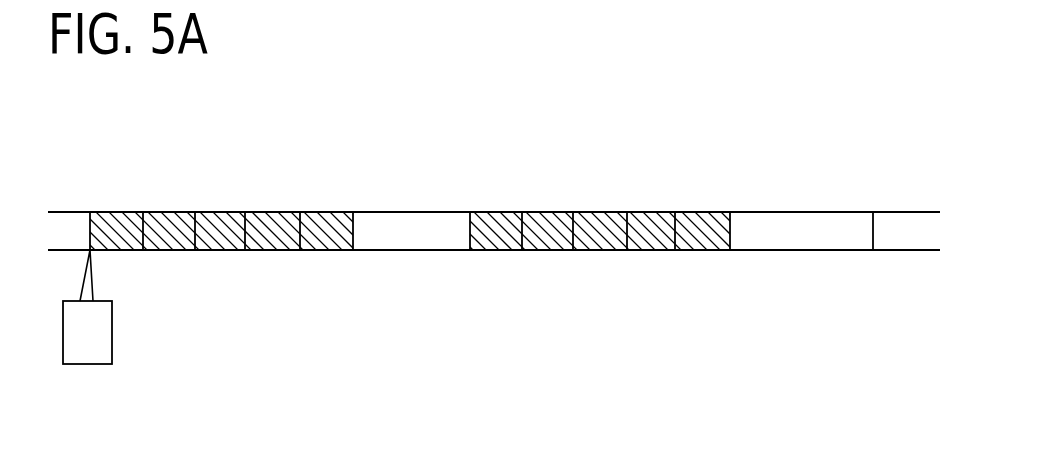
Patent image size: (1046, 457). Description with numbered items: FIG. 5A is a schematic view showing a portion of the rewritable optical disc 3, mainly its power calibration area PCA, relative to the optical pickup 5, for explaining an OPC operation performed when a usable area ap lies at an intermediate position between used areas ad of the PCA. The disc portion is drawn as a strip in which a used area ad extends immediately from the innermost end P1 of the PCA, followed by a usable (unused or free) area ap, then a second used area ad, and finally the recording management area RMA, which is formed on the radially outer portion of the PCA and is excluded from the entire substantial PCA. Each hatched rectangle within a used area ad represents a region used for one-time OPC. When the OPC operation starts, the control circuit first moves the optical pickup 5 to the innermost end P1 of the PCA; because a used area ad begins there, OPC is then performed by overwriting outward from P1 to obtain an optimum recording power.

The rewritable optical disc 3 is at (465, 120).
The optical pickup 5 is at (87, 354).
The innermost end of the PCA P1 is at (90, 208).
The used area ad is at (92, 208).
The usable area ap is at (468, 208).
The recording management area RMA is at (870, 207).
The power calibration area PCA is at (874, 260).